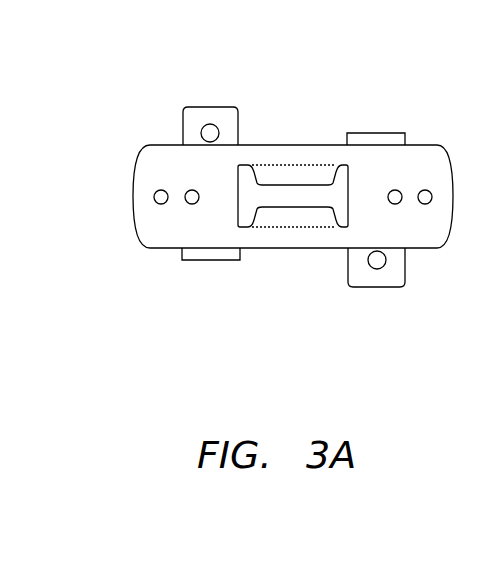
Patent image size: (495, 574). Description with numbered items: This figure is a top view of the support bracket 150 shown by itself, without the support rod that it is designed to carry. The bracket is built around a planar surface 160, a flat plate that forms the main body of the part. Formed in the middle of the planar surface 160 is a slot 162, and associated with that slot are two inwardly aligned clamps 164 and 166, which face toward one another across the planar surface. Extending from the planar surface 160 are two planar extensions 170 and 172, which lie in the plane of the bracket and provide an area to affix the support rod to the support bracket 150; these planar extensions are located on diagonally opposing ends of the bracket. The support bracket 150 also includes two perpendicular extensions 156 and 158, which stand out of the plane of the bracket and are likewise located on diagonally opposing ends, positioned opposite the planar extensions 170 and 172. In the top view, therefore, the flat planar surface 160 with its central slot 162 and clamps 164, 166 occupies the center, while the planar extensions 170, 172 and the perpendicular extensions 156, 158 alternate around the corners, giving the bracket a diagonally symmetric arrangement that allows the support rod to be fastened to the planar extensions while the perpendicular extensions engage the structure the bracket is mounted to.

The support bracket 150 is at (347, 81).
The perpendicular extension 156 is at (212, 262).
The perpendicular extension 158 is at (373, 141).
The planar surface 160 is at (150, 193).
The slot 162 is at (312, 185).
The clamp 164 is at (280, 250).
The clamp 166 is at (279, 200).
The planar extension 170 is at (195, 115).
The planar extension 172 is at (380, 288).